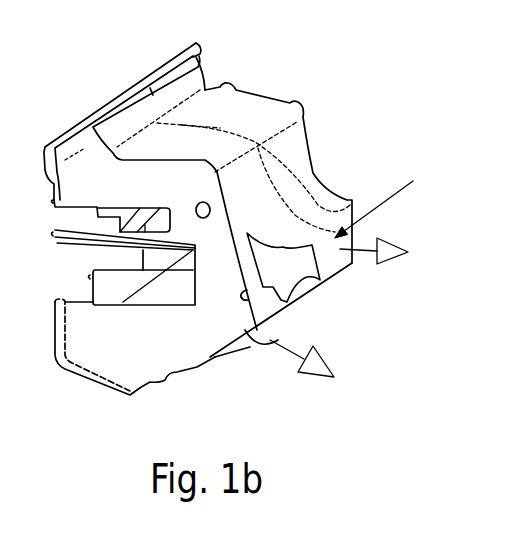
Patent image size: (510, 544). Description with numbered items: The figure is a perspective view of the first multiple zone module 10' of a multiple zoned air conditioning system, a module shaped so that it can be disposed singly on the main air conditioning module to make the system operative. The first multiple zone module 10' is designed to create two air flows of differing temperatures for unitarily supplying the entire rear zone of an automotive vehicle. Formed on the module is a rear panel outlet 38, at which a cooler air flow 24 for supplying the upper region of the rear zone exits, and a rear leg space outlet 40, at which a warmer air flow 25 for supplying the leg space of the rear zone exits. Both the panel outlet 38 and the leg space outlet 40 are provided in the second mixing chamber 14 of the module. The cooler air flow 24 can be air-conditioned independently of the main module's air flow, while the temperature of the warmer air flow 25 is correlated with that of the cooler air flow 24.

The first multiple zone module 10' is at (205, 219).
The second mixing chamber 14 is at (413, 181).
The cool air flow 24 is at (374, 247).
The warm air flow 25 is at (296, 353).
The panel outlet 38 is at (330, 257).
The leg space outlet 40 is at (257, 353).